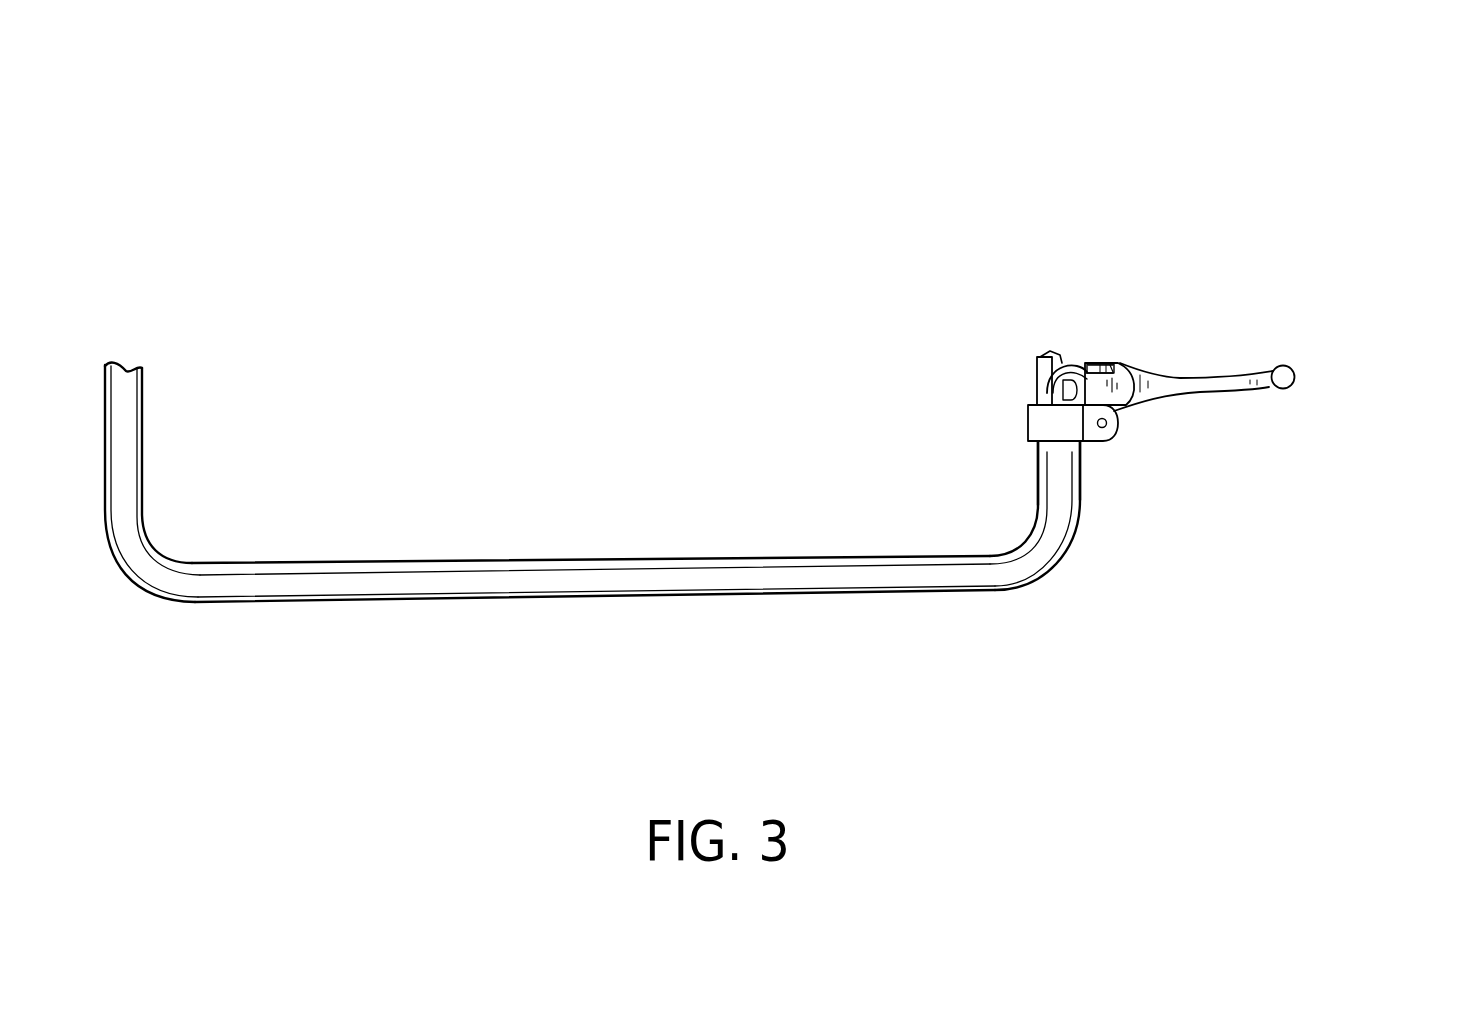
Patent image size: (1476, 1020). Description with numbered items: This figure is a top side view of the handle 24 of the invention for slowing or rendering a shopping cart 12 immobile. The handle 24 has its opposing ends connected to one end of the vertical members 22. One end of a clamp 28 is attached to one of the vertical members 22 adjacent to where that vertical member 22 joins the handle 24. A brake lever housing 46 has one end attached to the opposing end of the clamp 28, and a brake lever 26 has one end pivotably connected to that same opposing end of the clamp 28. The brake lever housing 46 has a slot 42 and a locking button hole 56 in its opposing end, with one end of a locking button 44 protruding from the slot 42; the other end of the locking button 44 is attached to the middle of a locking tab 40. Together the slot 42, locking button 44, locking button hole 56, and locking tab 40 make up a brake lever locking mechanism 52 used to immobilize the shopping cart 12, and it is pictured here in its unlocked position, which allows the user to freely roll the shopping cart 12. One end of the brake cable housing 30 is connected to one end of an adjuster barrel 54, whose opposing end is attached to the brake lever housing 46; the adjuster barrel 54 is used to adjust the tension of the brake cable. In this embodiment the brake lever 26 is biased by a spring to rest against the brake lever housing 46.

The shopping cart 12 is at (978, 593).
The vertical members 22 is at (1037, 365).
The handle 24 is at (420, 562).
The brake lever 26 is at (1295, 381).
The clamp 28 is at (1083, 443).
The brake cable housing 30 is at (1038, 357).
The locking tab 40 is at (1093, 362).
The slot 42 is at (1112, 360).
The locking button 44 is at (1108, 360).
The brake lever housing 46 is at (1120, 410).
The brake lever locking mechanism 52 is at (1060, 362).
The adjuster barrel 54 is at (1030, 405).
The locking button hole 56 is at (1130, 396).